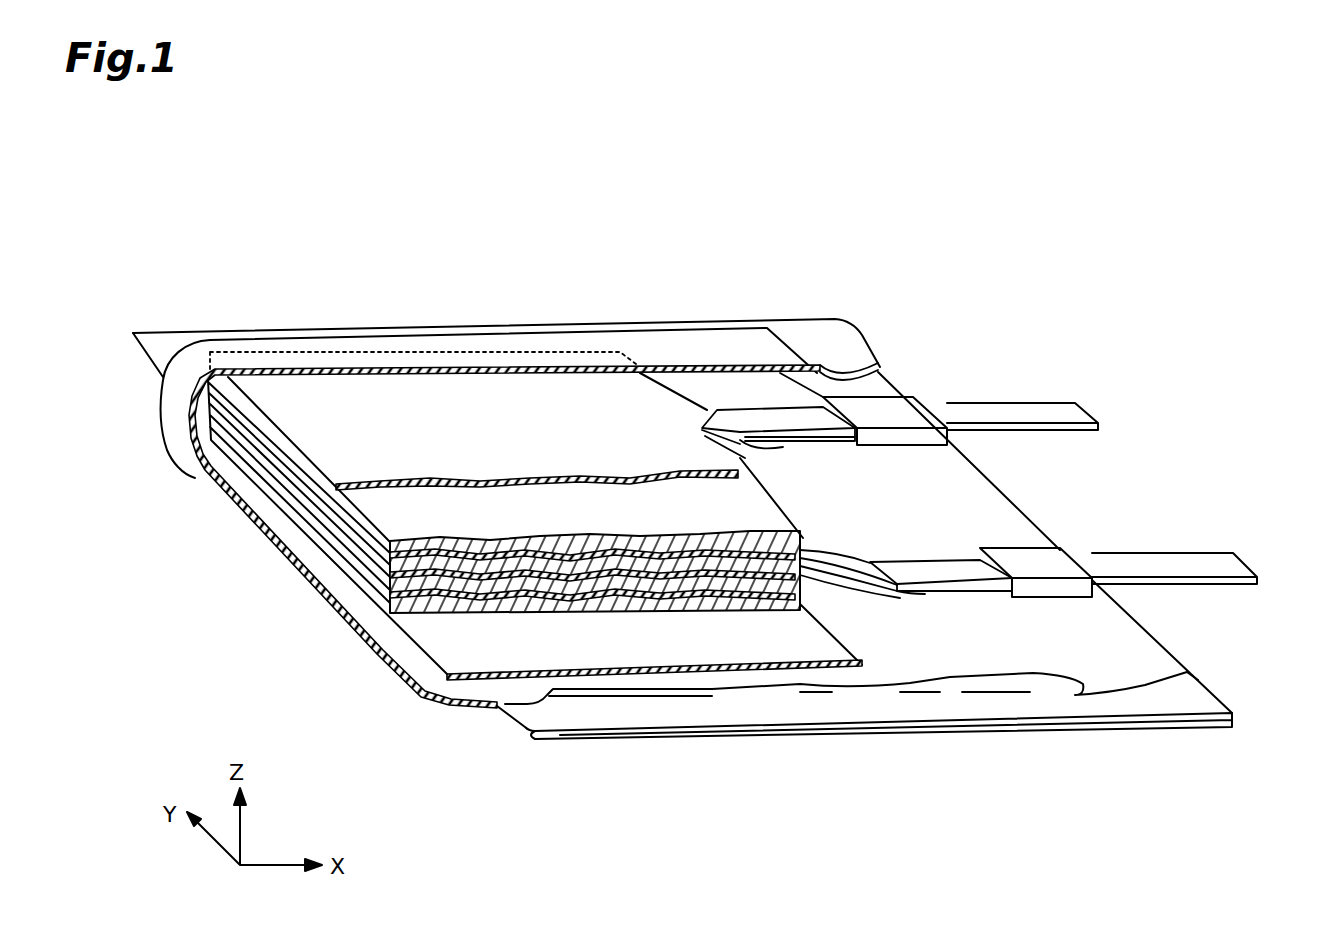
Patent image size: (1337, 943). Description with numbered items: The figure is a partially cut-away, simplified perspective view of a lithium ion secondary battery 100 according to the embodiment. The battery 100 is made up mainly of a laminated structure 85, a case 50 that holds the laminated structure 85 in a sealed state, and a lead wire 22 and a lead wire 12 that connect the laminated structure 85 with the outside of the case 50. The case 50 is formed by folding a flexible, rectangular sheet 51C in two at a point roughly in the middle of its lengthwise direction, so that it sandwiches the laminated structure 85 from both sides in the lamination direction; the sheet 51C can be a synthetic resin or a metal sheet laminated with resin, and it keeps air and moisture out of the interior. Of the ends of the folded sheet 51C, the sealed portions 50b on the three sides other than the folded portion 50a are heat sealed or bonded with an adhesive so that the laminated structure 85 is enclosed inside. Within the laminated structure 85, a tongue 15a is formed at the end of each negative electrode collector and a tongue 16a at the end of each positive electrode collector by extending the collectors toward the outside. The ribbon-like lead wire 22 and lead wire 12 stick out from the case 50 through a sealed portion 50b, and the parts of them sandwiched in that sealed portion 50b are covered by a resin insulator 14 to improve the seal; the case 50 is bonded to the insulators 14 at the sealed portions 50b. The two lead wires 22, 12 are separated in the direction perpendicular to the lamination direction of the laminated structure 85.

The lithium ion secondary battery 100 is at (677, 166).
The case 50 is at (490, 322).
The folded portion 50a is at (178, 404).
The sealed portion 50b is at (572, 332).
The sheet 51C is at (648, 331).
The laminated structure 85 is at (272, 476).
The tongue 15a is at (708, 423).
The tongue 16a is at (830, 556).
The insulator 14 is at (905, 404).
The lead wire 12 is at (1090, 402).
The lead wire 22 is at (1248, 556).